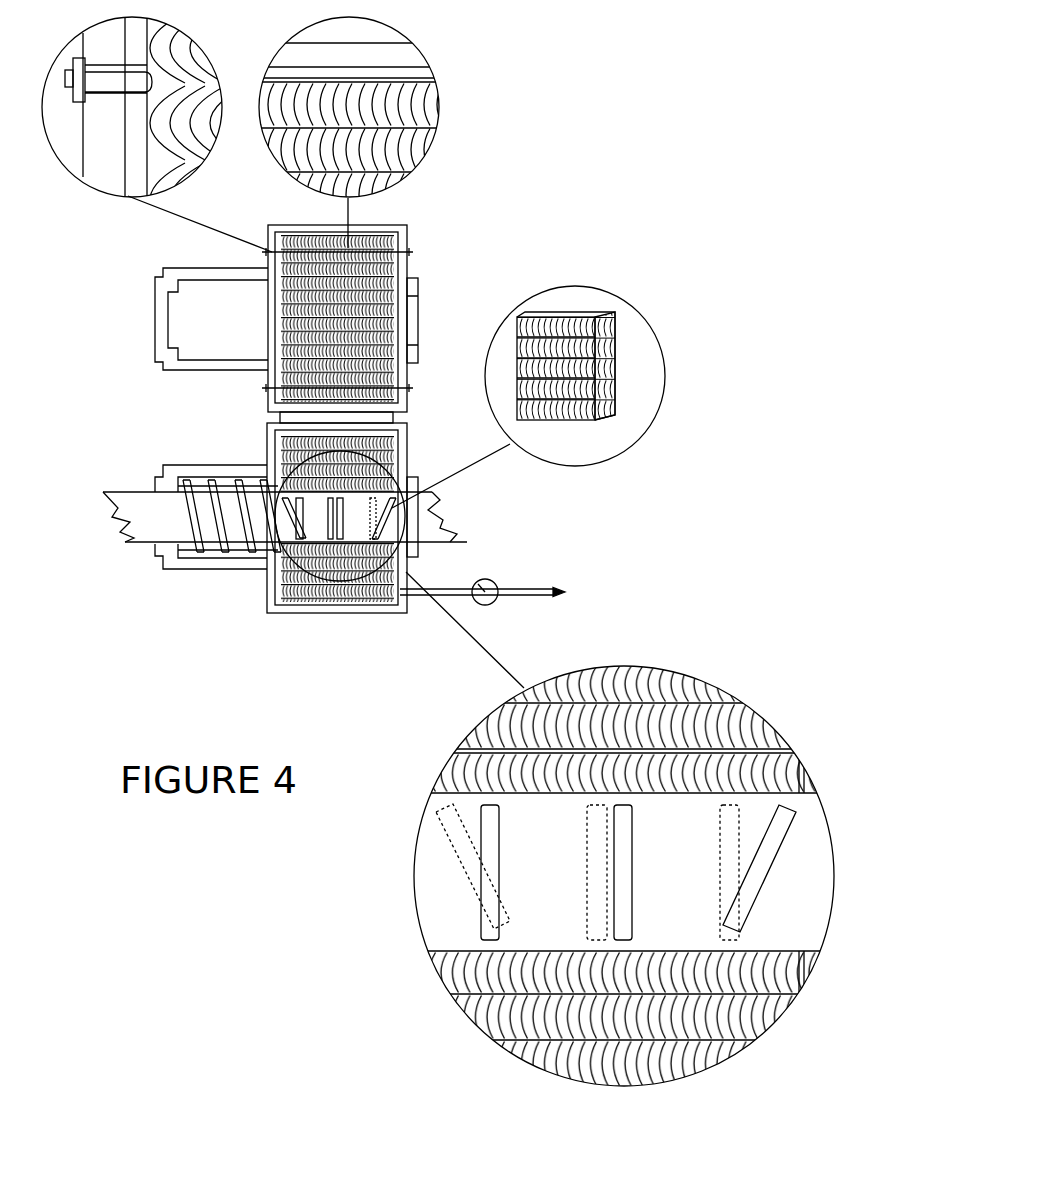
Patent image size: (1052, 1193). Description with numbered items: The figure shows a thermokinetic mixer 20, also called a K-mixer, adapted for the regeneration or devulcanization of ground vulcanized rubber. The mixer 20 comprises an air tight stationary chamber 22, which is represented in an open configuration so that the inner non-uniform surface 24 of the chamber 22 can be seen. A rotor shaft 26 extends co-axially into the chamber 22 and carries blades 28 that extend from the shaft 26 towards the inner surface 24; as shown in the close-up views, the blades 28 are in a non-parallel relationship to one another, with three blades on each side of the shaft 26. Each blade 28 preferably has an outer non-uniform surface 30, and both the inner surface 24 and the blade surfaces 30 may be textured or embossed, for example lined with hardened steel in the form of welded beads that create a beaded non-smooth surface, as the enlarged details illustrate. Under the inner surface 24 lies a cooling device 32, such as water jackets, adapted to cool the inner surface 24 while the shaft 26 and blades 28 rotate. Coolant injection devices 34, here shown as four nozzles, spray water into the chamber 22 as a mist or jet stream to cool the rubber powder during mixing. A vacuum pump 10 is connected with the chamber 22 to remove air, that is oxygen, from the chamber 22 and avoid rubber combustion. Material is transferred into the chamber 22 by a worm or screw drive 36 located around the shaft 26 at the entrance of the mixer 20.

The vacuum pump 10 is at (500, 577).
The thermokinetic mixer 20 is at (518, 205).
The air tight stationary chamber 22 is at (410, 267).
The inner non-uniform surface 24 is at (416, 318).
The rotor shaft 26 is at (448, 512).
The blades 28 is at (618, 336).
The outer non-uniform surface 30 is at (418, 110).
The cooling device 32 is at (133, 182).
The coolant injection device 34 is at (152, 22).
The worm drive or screw drive 36 is at (186, 527).